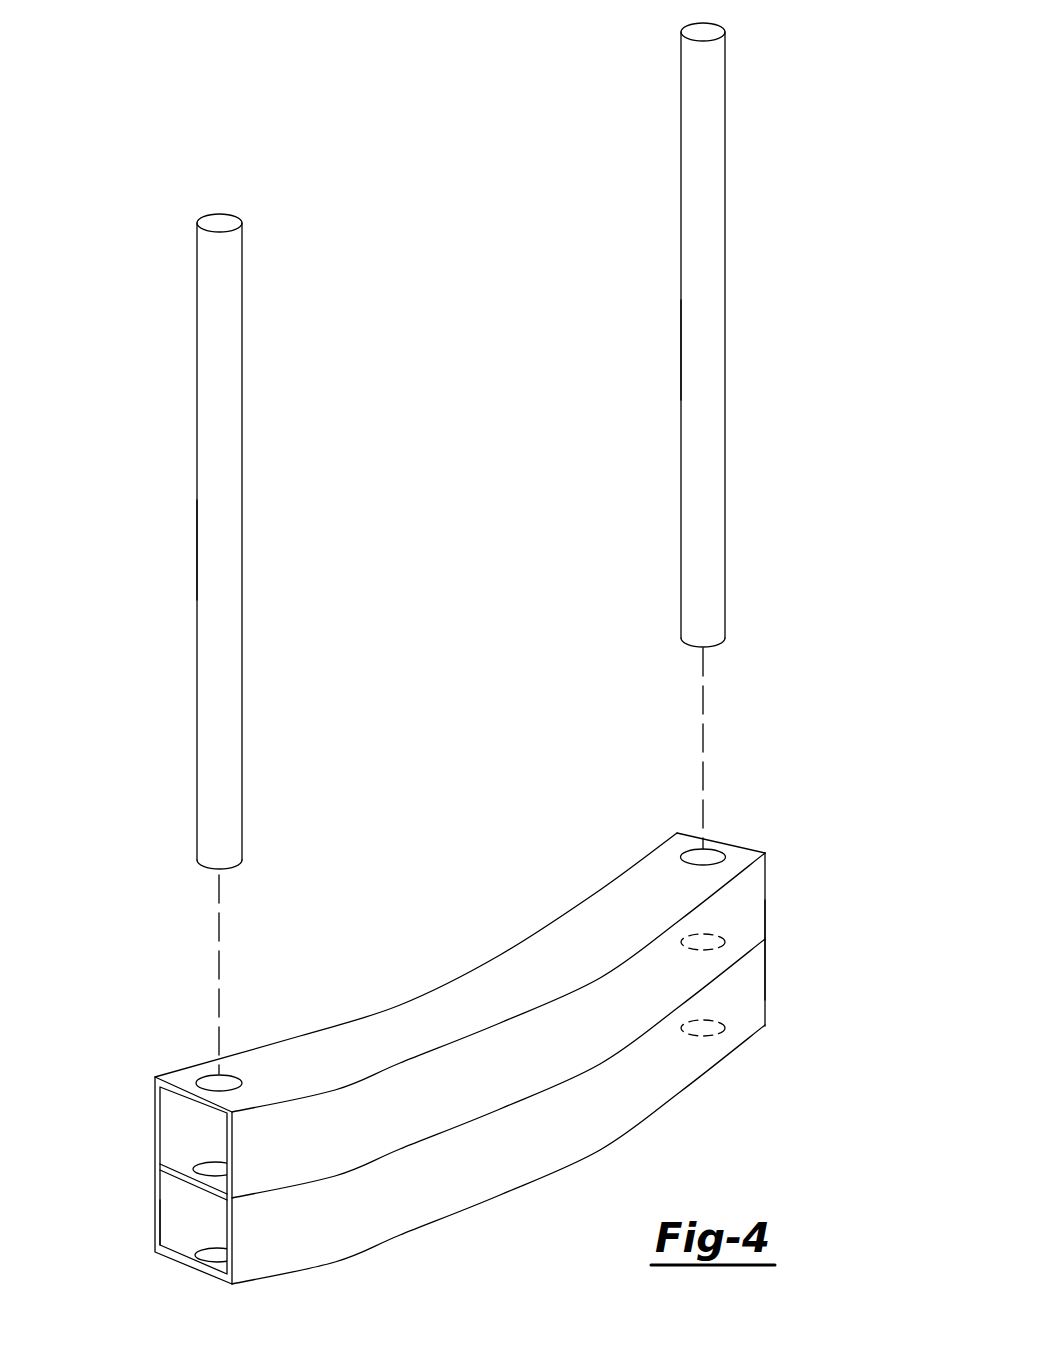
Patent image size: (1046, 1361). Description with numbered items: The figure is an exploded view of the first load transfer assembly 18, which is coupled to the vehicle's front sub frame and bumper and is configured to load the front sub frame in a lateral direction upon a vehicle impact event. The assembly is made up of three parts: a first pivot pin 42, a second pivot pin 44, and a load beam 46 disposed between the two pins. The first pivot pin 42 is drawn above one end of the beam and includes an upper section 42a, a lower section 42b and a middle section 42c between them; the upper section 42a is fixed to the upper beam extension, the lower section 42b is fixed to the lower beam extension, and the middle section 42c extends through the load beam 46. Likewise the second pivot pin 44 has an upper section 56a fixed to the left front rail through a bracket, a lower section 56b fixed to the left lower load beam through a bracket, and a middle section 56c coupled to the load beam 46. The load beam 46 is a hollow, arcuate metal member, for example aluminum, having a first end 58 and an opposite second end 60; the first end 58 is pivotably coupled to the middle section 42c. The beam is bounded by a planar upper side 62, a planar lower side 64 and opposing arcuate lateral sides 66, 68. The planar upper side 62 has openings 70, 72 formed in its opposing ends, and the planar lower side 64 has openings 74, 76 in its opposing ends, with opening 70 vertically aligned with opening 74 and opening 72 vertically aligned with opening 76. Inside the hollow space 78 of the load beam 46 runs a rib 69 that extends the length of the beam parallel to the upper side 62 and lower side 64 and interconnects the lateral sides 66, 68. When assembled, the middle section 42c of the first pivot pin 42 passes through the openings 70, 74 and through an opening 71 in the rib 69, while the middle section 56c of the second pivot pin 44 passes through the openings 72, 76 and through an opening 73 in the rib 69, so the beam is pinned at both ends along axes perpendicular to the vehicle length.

The first load transfer assembly 18 is at (452, 384).
The first pivot pin 42 is at (232, 447).
The upper section 42a is at (225, 250).
The lower section 42b is at (230, 822).
The middle section 42c is at (220, 553).
The second pivot pin 44 is at (720, 200).
The upper section 56a is at (707, 78).
The lower section 56b is at (712, 612).
The middle section 56c is at (705, 350).
The load beam 46 is at (478, 970).
The first end 58 is at (158, 1132).
The second end 60 is at (752, 897).
The planar upper side 62 is at (547, 970).
The planar lower side 64 is at (496, 1206).
The arcuate lateral side 66 is at (158, 1210).
The arcuate lateral side 68 is at (571, 1147).
The rib 69 is at (177, 1177).
The opening 70 is at (210, 1082).
The opening 71 is at (218, 1170).
The opening 72 is at (692, 853).
The opening 73 is at (707, 940).
The opening 74 is at (216, 1262).
The opening 76 is at (705, 1028).
The space 78 is at (182, 1103).